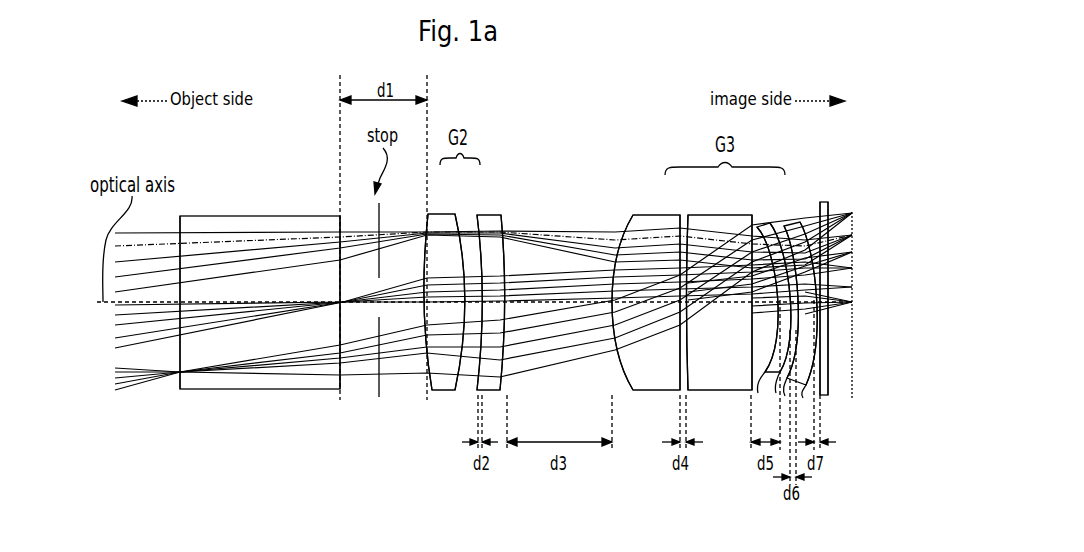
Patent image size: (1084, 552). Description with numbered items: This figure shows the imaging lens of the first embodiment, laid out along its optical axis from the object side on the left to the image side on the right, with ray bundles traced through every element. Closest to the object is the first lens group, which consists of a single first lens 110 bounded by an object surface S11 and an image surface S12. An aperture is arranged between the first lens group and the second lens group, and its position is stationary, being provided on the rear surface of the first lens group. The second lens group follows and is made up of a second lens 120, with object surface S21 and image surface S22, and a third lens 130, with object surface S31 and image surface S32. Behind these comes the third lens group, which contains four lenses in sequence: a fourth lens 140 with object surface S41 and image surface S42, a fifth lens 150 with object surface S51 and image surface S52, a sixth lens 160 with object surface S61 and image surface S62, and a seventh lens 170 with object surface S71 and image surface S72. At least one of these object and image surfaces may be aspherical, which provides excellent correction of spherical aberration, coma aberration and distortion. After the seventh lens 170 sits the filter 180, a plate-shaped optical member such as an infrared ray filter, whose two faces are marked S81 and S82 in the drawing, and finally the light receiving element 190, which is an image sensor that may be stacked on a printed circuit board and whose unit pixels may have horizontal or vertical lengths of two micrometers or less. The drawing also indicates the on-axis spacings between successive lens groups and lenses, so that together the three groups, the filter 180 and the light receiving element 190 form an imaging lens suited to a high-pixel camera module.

The first lens 110 is at (299, 215).
The second lens 120 is at (442, 214).
The third lens 130 is at (479, 215).
The fourth lens 140 is at (674, 215).
The fifth lens 150 is at (718, 215).
The sixth lens 160 is at (760, 228).
The seventh lens 170 is at (789, 225).
The filter 180 is at (827, 318).
The light receiving element 190 is at (853, 332).
The object surface of the first lens S11 is at (180, 374).
The image surface of the first lens S12 is at (341, 390).
The object surface of the second lens S21 is at (431, 391).
The image surface of the second lens S22 is at (468, 391).
The object surface of the third lens S31 is at (500, 217).
The image surface of the third lens S32 is at (503, 225).
The object surface of the fourth lens S41 is at (614, 389).
The image surface of the fourth lens S42 is at (679, 391).
The object surface of the fifth lens S51 is at (689, 391).
The image surface of the fifth lens S52 is at (751, 391).
The object surface of the sixth lens S61 is at (778, 383).
The image surface of the sixth lens S62 is at (800, 391).
The object surface of the seventh lens S71 is at (843, 234).
The image surface of the seventh lens S72 is at (842, 256).
The object-side surface of filter S81 is at (819, 202).
The image-side surface of filter S82 is at (830, 207).